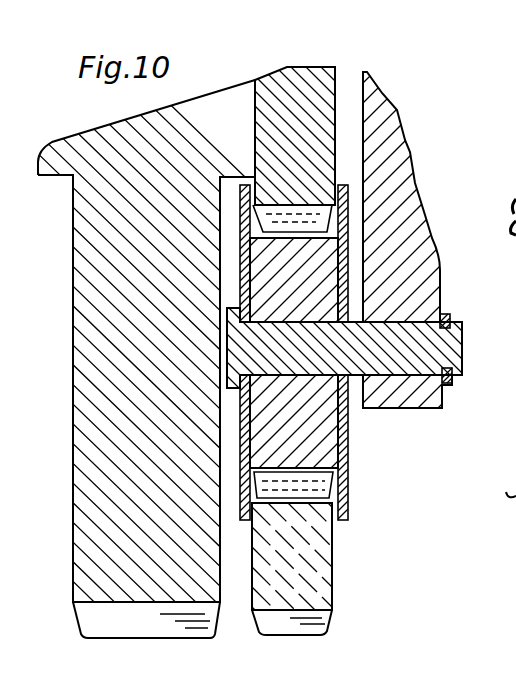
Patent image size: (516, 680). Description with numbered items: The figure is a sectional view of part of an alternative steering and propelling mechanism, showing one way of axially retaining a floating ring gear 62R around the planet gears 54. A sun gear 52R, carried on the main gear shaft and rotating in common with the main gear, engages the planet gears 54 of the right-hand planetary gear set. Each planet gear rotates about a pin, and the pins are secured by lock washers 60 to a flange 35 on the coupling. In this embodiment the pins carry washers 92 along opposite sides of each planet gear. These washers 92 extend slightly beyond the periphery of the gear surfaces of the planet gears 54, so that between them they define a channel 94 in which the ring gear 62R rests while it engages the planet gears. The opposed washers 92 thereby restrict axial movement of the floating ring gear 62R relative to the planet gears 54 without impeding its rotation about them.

The planet gears 54 is at (82, 532).
The sun gear 52R is at (292, 98).
The flange 35 is at (424, 290).
The lock washers 60 is at (446, 316).
The washers 92 is at (245, 465).
The channel 94 is at (292, 480).
The ring gear 62R is at (312, 577).